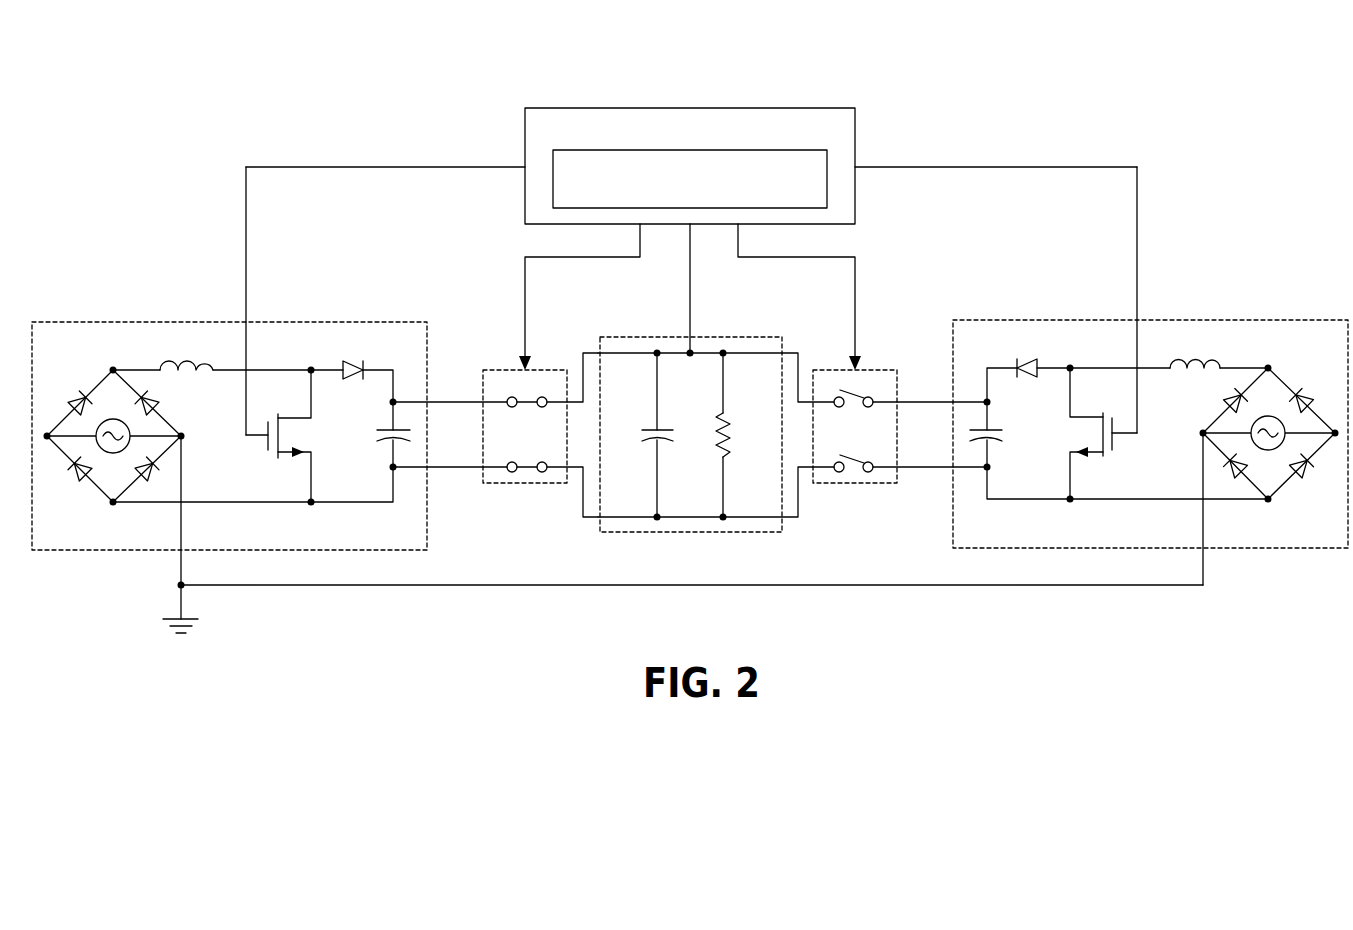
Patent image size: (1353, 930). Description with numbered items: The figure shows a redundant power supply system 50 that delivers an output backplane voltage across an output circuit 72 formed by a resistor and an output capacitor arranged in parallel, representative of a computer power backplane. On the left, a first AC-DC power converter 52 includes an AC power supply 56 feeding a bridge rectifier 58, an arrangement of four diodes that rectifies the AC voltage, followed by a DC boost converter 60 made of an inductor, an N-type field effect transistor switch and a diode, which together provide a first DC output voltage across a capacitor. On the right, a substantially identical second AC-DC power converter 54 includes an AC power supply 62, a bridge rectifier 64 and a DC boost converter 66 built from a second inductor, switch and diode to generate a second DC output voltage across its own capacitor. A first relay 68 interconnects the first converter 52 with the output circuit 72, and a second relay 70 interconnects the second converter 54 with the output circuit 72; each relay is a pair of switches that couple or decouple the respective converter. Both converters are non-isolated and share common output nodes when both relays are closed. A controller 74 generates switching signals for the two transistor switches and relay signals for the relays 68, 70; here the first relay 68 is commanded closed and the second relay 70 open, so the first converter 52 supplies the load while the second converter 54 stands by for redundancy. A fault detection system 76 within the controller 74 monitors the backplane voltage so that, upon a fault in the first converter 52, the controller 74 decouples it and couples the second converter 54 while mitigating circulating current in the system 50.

The redundant power supply system 50 is at (157, 126).
The first AC-DC power converter 52 is at (269, 417).
The second AC-DC power converter 54 is at (1150, 416).
The AC power supply 56 is at (109, 455).
The bridge rectifier 58 is at (198, 462).
The DC boost converter 60 is at (287, 343).
The AC power supply 62 is at (1272, 483).
The bridge rectifier 64 is at (1183, 461).
The DC boost converter 66 is at (1067, 343).
The first relay 68 is at (527, 483).
The second relay 70 is at (857, 483).
The output circuit 72 is at (740, 532).
The controller 74 is at (720, 161).
The fault detection system 76 is at (827, 193).